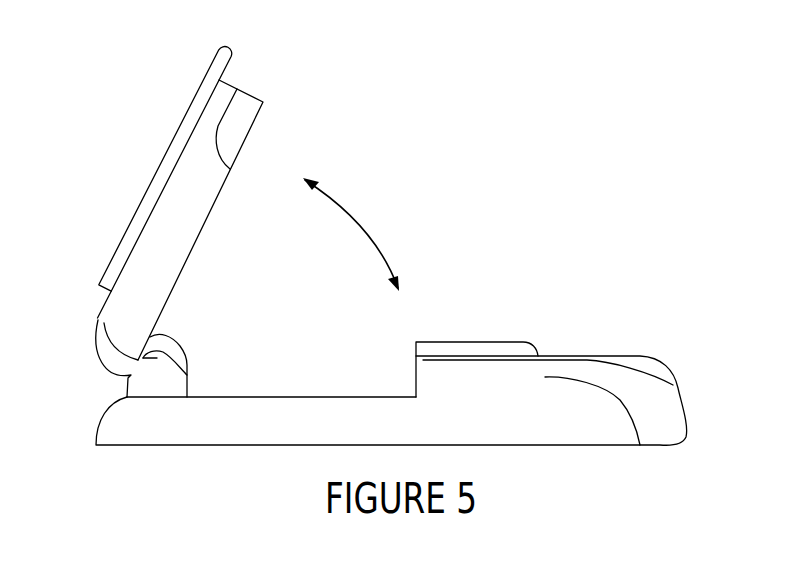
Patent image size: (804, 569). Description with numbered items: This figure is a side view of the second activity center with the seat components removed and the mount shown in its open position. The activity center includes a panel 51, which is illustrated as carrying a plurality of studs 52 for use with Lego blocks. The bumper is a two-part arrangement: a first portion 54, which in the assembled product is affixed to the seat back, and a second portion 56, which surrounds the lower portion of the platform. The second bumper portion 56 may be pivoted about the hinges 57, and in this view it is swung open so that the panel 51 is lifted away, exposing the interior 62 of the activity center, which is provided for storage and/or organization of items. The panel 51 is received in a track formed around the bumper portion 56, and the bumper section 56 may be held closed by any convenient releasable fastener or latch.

The panel 51 is at (205, 63).
The studs 52 is at (565, 417).
The first portion of bumper 54 is at (613, 356).
The second portion of bumper 56 is at (108, 318).
The hinges 57 is at (188, 360).
The interior 62 is at (309, 392).